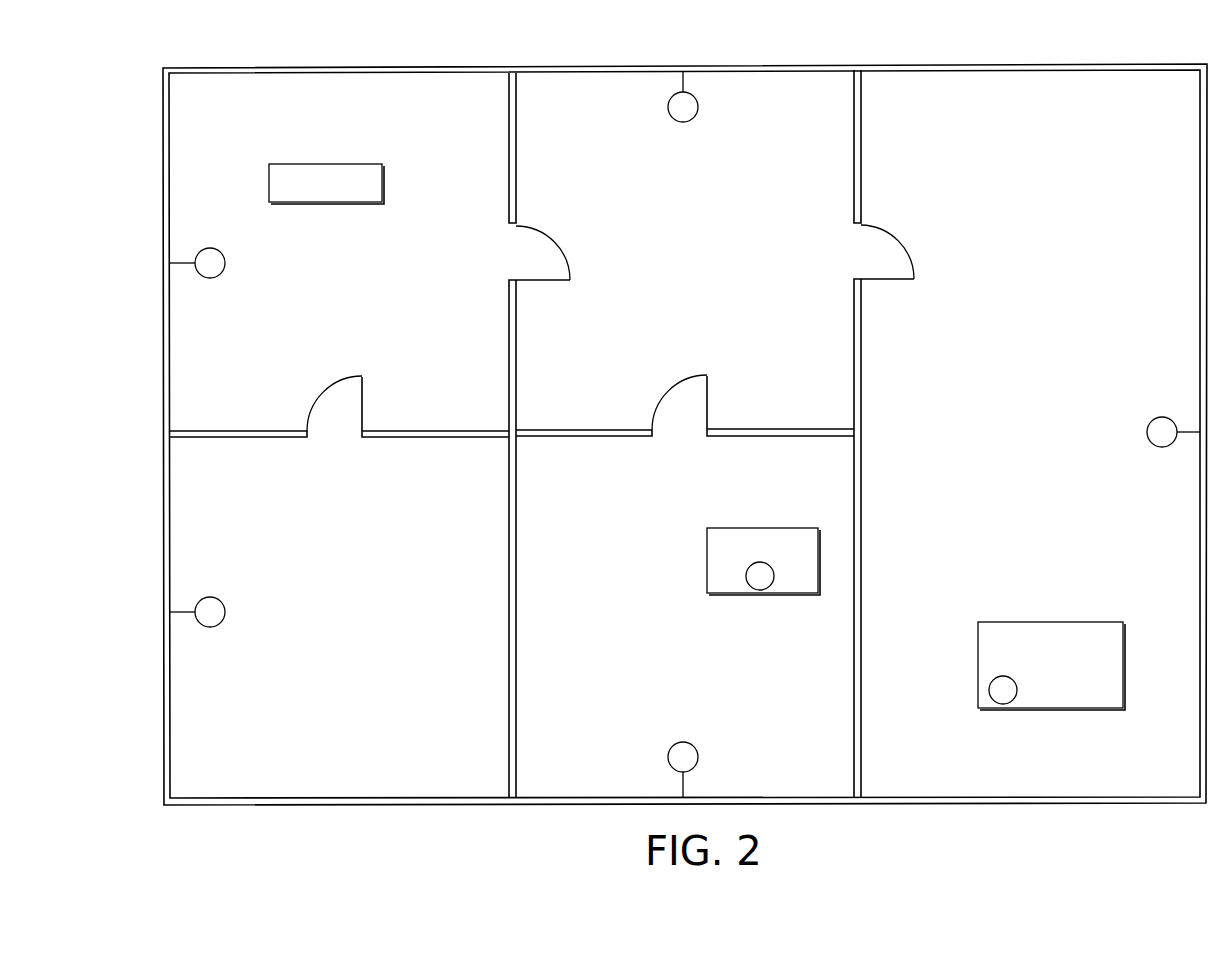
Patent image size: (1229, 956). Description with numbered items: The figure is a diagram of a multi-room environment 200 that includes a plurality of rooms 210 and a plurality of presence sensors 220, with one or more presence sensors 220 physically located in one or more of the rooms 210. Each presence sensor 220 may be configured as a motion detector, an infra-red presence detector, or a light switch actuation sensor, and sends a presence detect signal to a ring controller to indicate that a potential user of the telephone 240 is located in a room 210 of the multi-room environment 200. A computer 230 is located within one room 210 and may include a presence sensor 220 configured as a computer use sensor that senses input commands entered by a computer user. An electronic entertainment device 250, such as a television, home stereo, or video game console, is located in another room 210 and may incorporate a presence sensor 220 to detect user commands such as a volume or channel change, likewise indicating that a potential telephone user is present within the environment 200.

The multi-room environment 200 is at (1121, 43).
The room 210 is at (440, 355).
The presence sensor 220 is at (210, 278).
The computer 230 is at (752, 527).
The telephone 240 is at (318, 163).
The electronic entertainment device 250 is at (1045, 621).